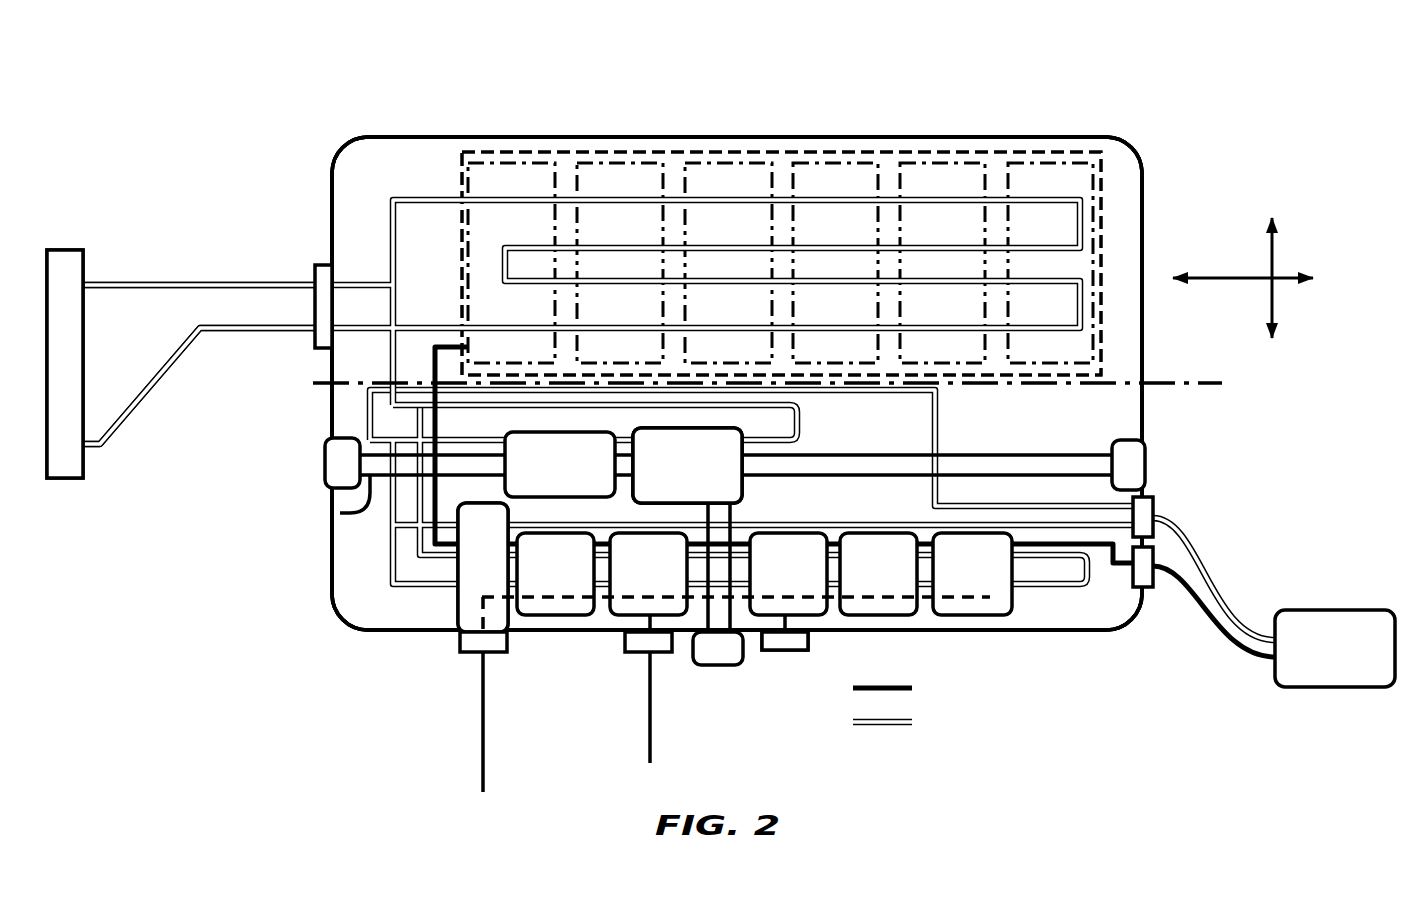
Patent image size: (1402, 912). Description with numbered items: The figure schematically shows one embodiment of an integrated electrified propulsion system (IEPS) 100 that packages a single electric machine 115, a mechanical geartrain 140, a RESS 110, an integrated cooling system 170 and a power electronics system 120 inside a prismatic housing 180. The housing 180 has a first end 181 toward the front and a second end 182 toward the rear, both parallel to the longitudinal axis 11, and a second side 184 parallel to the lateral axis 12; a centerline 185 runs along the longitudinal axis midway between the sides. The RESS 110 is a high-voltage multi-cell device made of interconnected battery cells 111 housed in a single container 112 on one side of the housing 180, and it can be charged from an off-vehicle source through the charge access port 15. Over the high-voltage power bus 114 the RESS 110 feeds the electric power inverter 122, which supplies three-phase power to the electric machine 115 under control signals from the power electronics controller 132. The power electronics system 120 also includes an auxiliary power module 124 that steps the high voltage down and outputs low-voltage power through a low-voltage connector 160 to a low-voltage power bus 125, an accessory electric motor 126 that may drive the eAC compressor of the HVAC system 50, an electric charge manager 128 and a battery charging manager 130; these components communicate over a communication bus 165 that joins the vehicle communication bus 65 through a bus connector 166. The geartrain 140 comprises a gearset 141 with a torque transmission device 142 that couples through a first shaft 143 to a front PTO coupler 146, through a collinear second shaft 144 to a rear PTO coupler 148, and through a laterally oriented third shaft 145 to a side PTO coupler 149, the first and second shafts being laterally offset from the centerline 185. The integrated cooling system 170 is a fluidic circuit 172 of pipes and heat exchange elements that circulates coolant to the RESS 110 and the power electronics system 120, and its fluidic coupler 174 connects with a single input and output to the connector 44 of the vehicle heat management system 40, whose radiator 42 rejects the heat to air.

The longitudinal axis 11 is at (1243, 278).
The lateral axis 12 is at (1273, 297).
The charge access port 15 is at (1340, 610).
The heat management system 40 is at (67, 248).
The fluid/air heat exchanger (radiator) 42 is at (67, 478).
The connector 44 is at (313, 307).
The HVAC system 50 is at (793, 655).
The vehicle communication bus 65 is at (482, 755).
The integrated electrified propulsion system (IEPS) 100 is at (718, 135).
The RESS 110 is at (460, 223).
The battery cells 111 is at (700, 163).
The container 112 is at (1073, 152).
The high-voltage power bus 114 is at (960, 704).
The single electric machine 115 is at (581, 482).
The power electronics system 120 is at (457, 602).
The electric power inverter 122 is at (576, 592).
The auxiliary power module (APM) 124 is at (668, 592).
The low-voltage power bus 125 is at (648, 733).
The accessory electric motor 126 is at (808, 592).
The electric charge manager 128 is at (898, 592).
The battery charging manager 130 is at (992, 592).
The power electronics controller 132 is at (457, 612).
The mechanical geartrain 140 is at (733, 466).
The gearset 141 is at (687, 465).
The torque transmission device 142 is at (687, 465).
The first shaft 143 is at (340, 513).
The second shaft 144 is at (1050, 455).
The third shaft 145 is at (730, 517).
The front PTO coupler 146 is at (325, 455).
The rear PTO coupler 148 is at (1145, 455).
The side PTO coupler 149 is at (717, 665).
The low-voltage connector 160 is at (630, 652).
The communication bus 165 is at (487, 618).
The bus connector 166 is at (473, 652).
The integrated cooling system 170 is at (357, 281).
The fluidic circuit 172 is at (960, 737).
The fluidic coupler 174 is at (199, 364).
The housing 180 is at (1143, 183).
The first end 181 is at (330, 180).
The second end 182 is at (1118, 228).
The second side 184 is at (393, 135).
The centerline 185 is at (1170, 383).